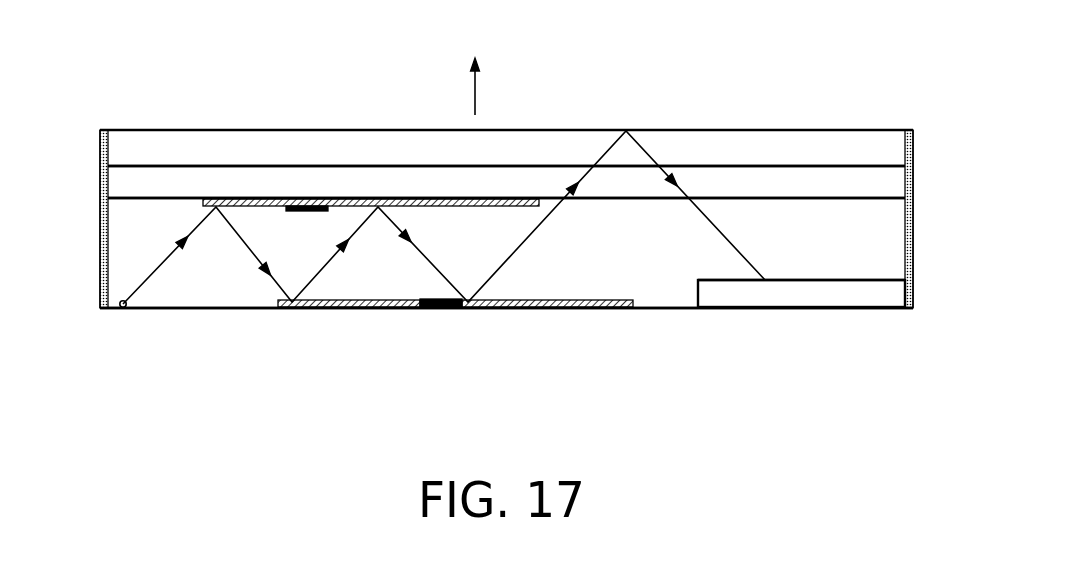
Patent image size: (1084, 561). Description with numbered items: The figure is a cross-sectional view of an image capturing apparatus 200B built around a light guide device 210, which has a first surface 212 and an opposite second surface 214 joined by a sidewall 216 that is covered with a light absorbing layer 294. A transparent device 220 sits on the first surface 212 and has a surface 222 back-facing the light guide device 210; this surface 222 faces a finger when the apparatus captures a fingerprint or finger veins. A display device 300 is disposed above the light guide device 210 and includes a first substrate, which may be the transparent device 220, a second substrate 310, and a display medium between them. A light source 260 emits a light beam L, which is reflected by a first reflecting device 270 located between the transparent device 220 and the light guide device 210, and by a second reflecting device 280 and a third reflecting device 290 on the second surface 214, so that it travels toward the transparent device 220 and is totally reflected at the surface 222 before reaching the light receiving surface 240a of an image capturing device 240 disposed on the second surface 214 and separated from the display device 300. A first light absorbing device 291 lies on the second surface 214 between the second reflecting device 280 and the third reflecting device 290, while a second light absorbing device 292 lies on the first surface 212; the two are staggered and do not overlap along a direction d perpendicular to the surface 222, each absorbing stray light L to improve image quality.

The image capturing apparatus 200B is at (502, 227).
The light guide device 210 is at (127, 245).
The first surface 212 is at (132, 192).
The second surface 214 is at (244, 316).
The sidewall 216 is at (95, 277).
The transparent device 220 is at (897, 182).
The surface 222 is at (800, 157).
The image capturing device 240 is at (770, 298).
The light receiving surface 240a is at (792, 273).
The light source 260 is at (123, 309).
The first reflecting device 270 is at (409, 199).
The second reflecting device 280 is at (347, 310).
The third reflecting device 290 is at (540, 310).
The first light absorbing device 291 is at (440, 310).
The second light absorbing device 292 is at (284, 208).
The light absorbing layer 294 is at (103, 310).
The display device 300 is at (534, 98).
The second substrate 310 is at (882, 148).
The light beam L is at (147, 280).
The direction d is at (475, 98).